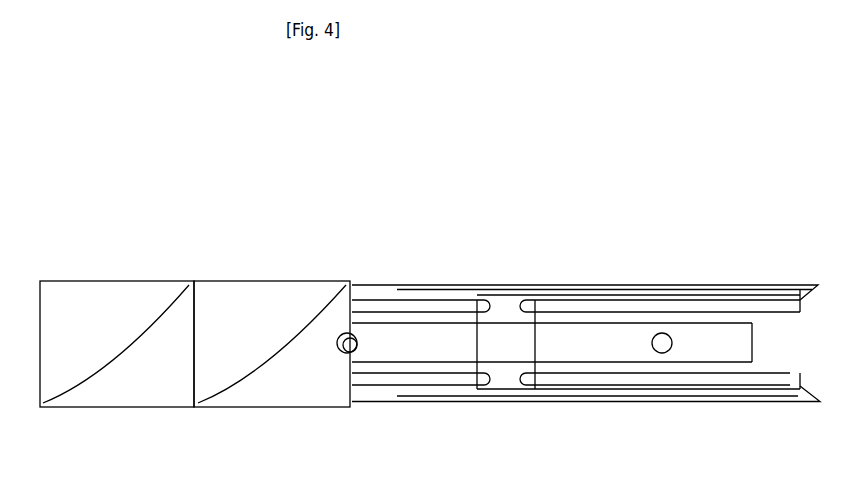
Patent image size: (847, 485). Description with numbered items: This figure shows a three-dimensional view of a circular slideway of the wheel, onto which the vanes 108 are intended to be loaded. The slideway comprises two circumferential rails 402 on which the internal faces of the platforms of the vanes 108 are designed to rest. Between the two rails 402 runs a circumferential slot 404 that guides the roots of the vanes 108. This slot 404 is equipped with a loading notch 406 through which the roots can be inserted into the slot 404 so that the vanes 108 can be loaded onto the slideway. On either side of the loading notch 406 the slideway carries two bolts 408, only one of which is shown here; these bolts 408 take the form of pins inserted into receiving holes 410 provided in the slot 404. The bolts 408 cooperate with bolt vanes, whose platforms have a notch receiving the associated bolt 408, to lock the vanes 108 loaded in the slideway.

The vane 108 is at (298, 406).
The circumferential rail 402 is at (691, 396).
The circumferential slot 404 is at (611, 344).
The loading notch 406 is at (510, 393).
The bolt 408 is at (358, 352).
The receiving hole 410 is at (357, 337).